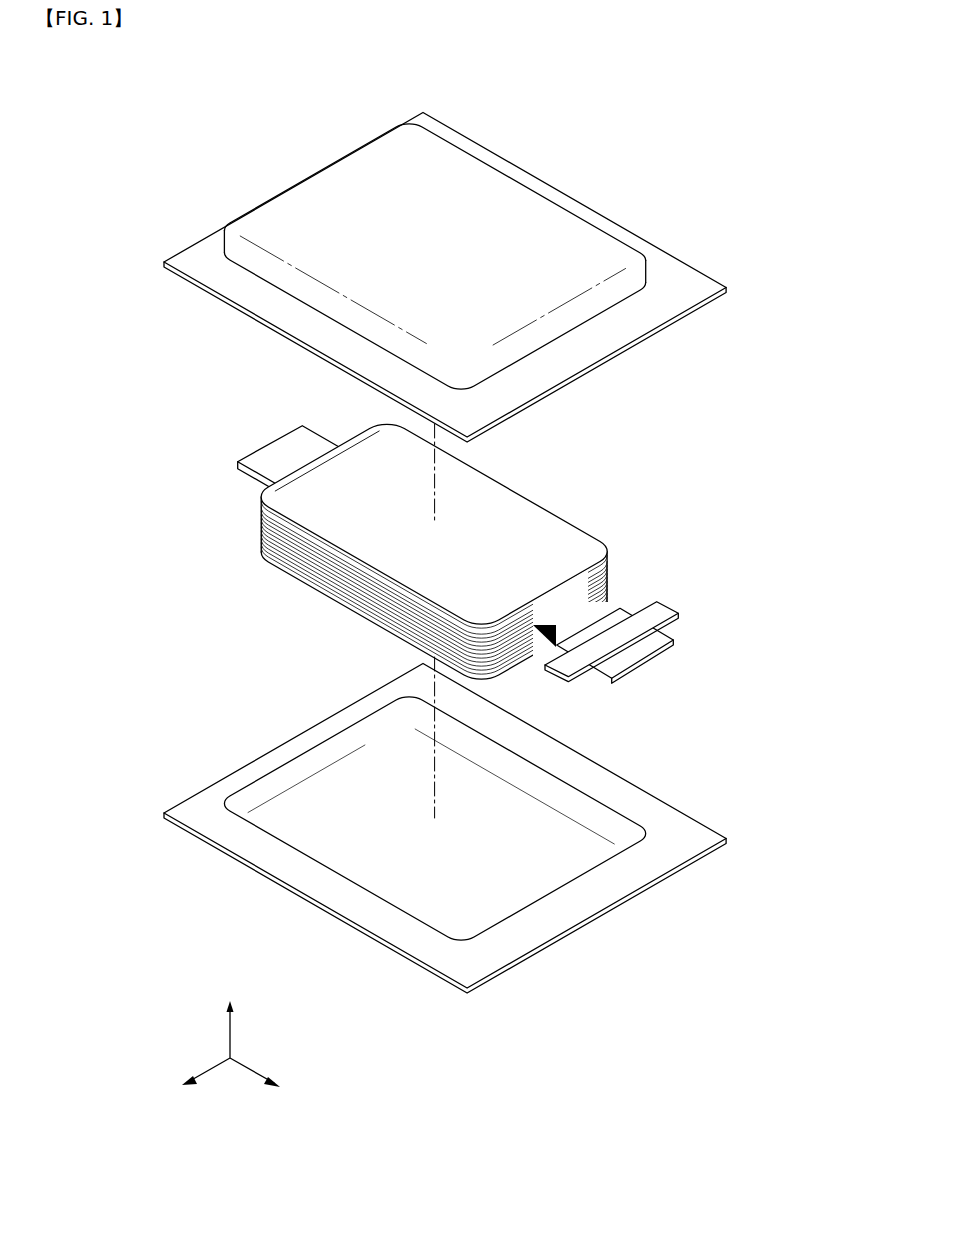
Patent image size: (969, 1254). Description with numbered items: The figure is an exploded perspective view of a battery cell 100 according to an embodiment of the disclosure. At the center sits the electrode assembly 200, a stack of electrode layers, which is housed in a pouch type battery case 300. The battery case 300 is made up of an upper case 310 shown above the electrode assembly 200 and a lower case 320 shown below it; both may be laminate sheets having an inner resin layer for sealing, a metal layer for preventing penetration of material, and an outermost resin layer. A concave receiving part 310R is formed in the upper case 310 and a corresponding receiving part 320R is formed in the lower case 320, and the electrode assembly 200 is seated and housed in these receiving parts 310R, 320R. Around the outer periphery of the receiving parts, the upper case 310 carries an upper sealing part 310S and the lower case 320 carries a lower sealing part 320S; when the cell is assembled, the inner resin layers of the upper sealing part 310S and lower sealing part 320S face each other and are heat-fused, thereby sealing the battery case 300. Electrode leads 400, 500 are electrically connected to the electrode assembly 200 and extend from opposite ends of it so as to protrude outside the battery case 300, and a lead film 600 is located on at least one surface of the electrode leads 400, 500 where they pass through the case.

The battery cell 100 is at (326, 72).
The electrode assembly 200 is at (215, 512).
The battery case 300 is at (809, 465).
The upper case 310 is at (660, 343).
The receiving part 310R is at (508, 200).
The upper sealing part 310S is at (229, 281).
The lower case 320 is at (660, 786).
The receiving part 320R is at (337, 805).
The lower sealing part 320S is at (238, 836).
The electrode lead 400 is at (625, 657).
The electrode lead 500 is at (287, 447).
The lead film 600 is at (660, 611).